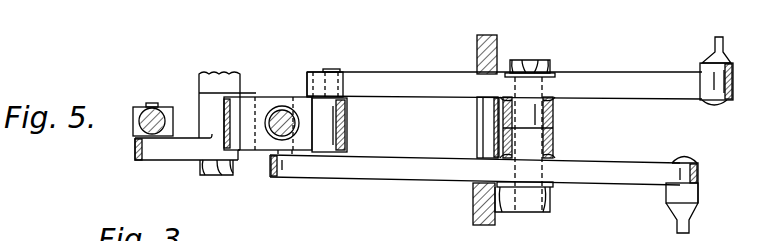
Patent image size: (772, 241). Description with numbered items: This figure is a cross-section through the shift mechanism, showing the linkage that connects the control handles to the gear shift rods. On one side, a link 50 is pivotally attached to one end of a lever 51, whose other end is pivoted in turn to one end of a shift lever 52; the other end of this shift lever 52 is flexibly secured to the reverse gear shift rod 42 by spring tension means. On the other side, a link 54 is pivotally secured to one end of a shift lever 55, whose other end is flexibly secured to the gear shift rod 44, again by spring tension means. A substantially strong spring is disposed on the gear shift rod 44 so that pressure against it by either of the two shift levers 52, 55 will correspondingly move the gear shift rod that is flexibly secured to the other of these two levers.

The reverse gear shift rod 42 is at (133, 110).
The gear shift rod 44 is at (279, 114).
The link 50 is at (726, 46).
The lever 51 is at (617, 82).
The shift lever 52 is at (182, 163).
The link 54 is at (693, 228).
The shift lever 55 is at (408, 176).